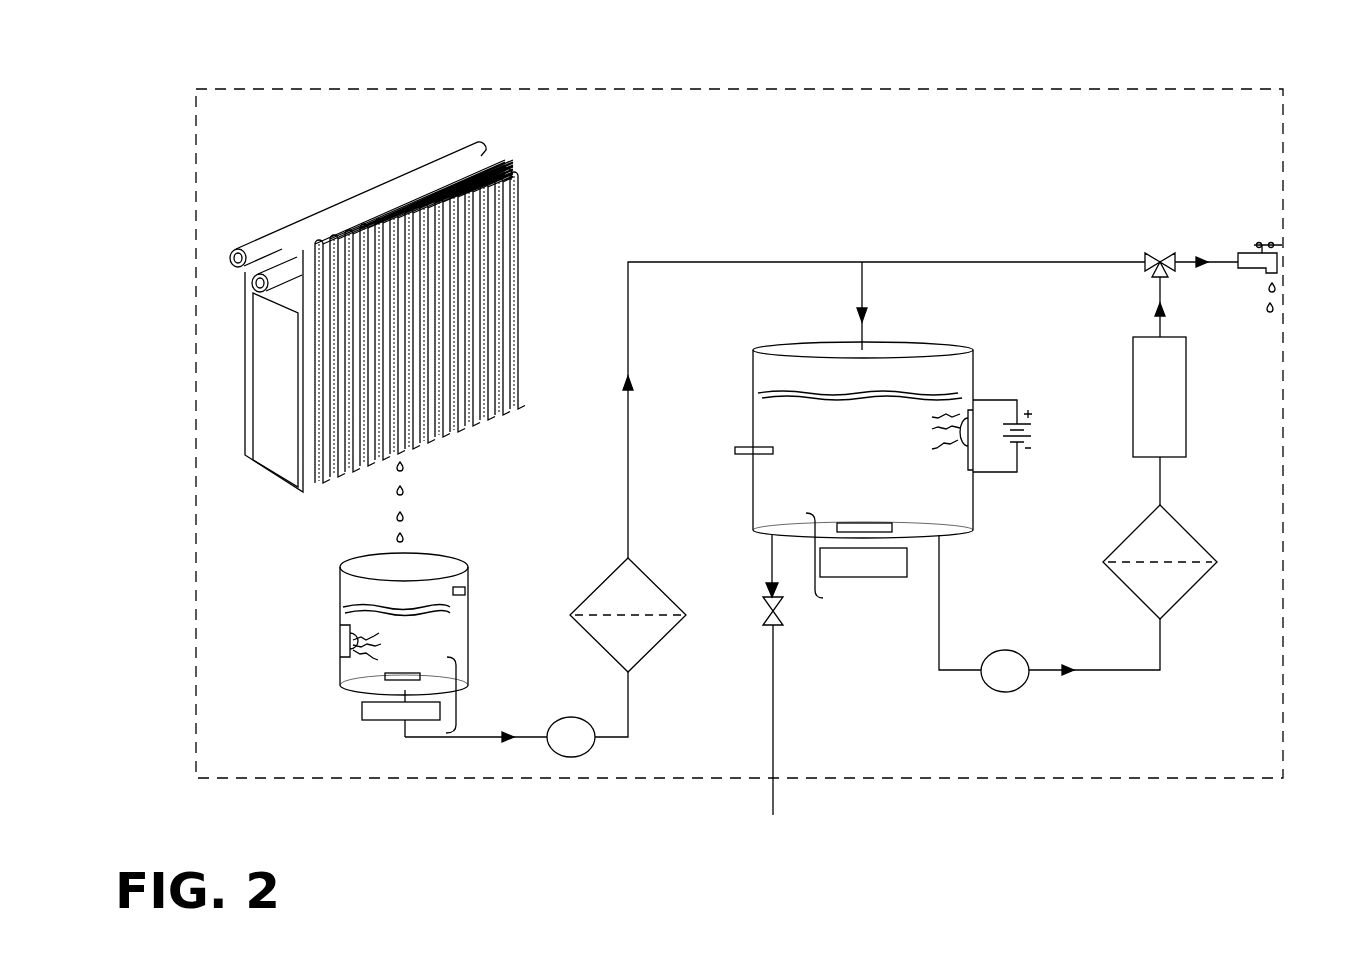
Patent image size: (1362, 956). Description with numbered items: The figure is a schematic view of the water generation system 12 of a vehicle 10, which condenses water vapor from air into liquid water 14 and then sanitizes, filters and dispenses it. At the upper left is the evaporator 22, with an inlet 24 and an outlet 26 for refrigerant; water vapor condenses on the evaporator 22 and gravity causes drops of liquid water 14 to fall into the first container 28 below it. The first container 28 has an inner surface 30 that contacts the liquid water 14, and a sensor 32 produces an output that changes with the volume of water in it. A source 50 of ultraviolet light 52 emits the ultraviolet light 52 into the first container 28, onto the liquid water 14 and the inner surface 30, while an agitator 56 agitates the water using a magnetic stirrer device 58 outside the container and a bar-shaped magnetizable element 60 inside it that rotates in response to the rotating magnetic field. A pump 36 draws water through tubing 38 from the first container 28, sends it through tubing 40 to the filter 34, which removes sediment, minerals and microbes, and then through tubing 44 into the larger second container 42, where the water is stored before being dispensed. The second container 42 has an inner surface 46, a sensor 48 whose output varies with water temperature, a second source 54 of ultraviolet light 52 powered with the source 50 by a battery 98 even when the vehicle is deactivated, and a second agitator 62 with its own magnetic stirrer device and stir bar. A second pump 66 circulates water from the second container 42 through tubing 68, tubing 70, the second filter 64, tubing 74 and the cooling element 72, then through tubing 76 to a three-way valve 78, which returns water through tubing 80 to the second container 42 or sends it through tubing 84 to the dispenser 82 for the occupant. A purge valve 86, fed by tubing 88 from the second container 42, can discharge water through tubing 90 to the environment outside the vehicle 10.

The vehicle 10 is at (197, 193).
The water generation system 12 is at (252, 147).
The liquid water 14 is at (398, 623).
The evaporator 22 is at (327, 207).
The inlet 24 is at (232, 260).
The outlet 26 is at (257, 284).
The first container 28 is at (337, 683).
The inner surface 30 is at (468, 617).
The sensor 32 is at (467, 587).
The filter 34 is at (647, 653).
The pump 36 is at (570, 757).
The tubing 38 is at (525, 740).
The tubing 40 is at (613, 740).
The second container 42 is at (753, 368).
The tubing 44 is at (690, 260).
The inner surface 46 is at (753, 415).
The sensor 48 is at (743, 447).
The source of ultraviolet light 50 is at (343, 642).
The ultraviolet light 52 is at (363, 630).
The second source of ultraviolet light 54 is at (973, 420).
The agitator 56 is at (460, 700).
The magnetic stirrer device 58 is at (362, 712).
The magnetizable element 60 is at (383, 672).
The second agitator 62 is at (807, 563).
The second filter 64 is at (1202, 583).
The second pump 66 is at (1004, 695).
The tubing 68 is at (940, 607).
The tubing 70 is at (1110, 673).
The cooling element 72 is at (1187, 380).
The tubing 74 is at (1163, 473).
The tubing 76 is at (1162, 287).
The three-way valve 78 is at (1167, 253).
The tubing 80 is at (960, 260).
The dispenser 82 is at (1252, 253).
The tubing 84 is at (1222, 260).
The purge valve 86 is at (763, 600).
The tubing 88 is at (772, 562).
The tubing 90 is at (770, 679).
The battery 98 is at (1027, 440).